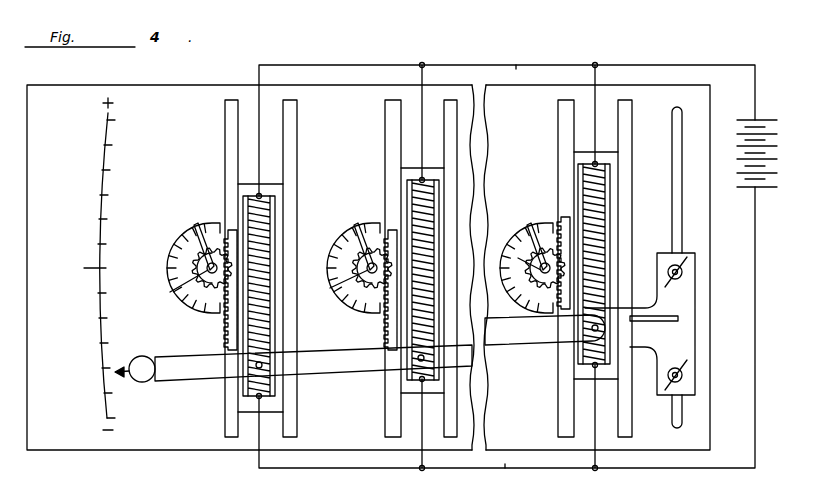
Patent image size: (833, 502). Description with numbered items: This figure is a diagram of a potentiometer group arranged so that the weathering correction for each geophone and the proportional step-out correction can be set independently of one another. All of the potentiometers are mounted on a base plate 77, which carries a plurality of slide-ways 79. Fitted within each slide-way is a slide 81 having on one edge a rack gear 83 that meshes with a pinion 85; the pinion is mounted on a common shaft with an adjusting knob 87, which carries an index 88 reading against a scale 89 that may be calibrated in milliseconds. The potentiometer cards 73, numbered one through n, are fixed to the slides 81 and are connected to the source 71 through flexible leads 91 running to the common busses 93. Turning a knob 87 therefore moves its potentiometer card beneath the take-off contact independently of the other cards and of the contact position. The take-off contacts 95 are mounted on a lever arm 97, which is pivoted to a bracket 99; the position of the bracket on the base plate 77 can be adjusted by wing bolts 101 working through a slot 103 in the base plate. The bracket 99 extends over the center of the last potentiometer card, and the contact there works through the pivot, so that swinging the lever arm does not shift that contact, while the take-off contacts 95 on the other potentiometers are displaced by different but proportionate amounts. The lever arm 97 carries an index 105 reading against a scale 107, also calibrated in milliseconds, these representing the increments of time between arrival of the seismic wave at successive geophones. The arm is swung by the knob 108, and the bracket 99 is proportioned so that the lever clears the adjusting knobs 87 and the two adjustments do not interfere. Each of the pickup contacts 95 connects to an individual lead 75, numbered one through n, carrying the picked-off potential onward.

The source 71 is at (737, 120).
The potentiometer cards 73 is at (268, 220).
The individual leads 75 is at (618, 316).
The base plate 77 is at (168, 450).
The slide-ways 79 is at (225, 152).
The slide 81 is at (270, 184).
The rack gear 83 is at (228, 325).
The pinion 85 is at (205, 288).
The adjusting knob 87 is at (520, 258).
The index 88 is at (198, 239).
The scale 89 is at (192, 257).
The flexible leads 91 is at (257, 68).
The common busses 93 is at (516, 65).
The take-off contacts 95 is at (263, 366).
The lever arm 97 is at (333, 360).
The bracket 99 is at (677, 341).
The wing bolts 101 is at (671, 266).
The slot 103 is at (678, 196).
The index 105 is at (126, 367).
The scale 107 is at (100, 345).
The knob 108 is at (145, 383).